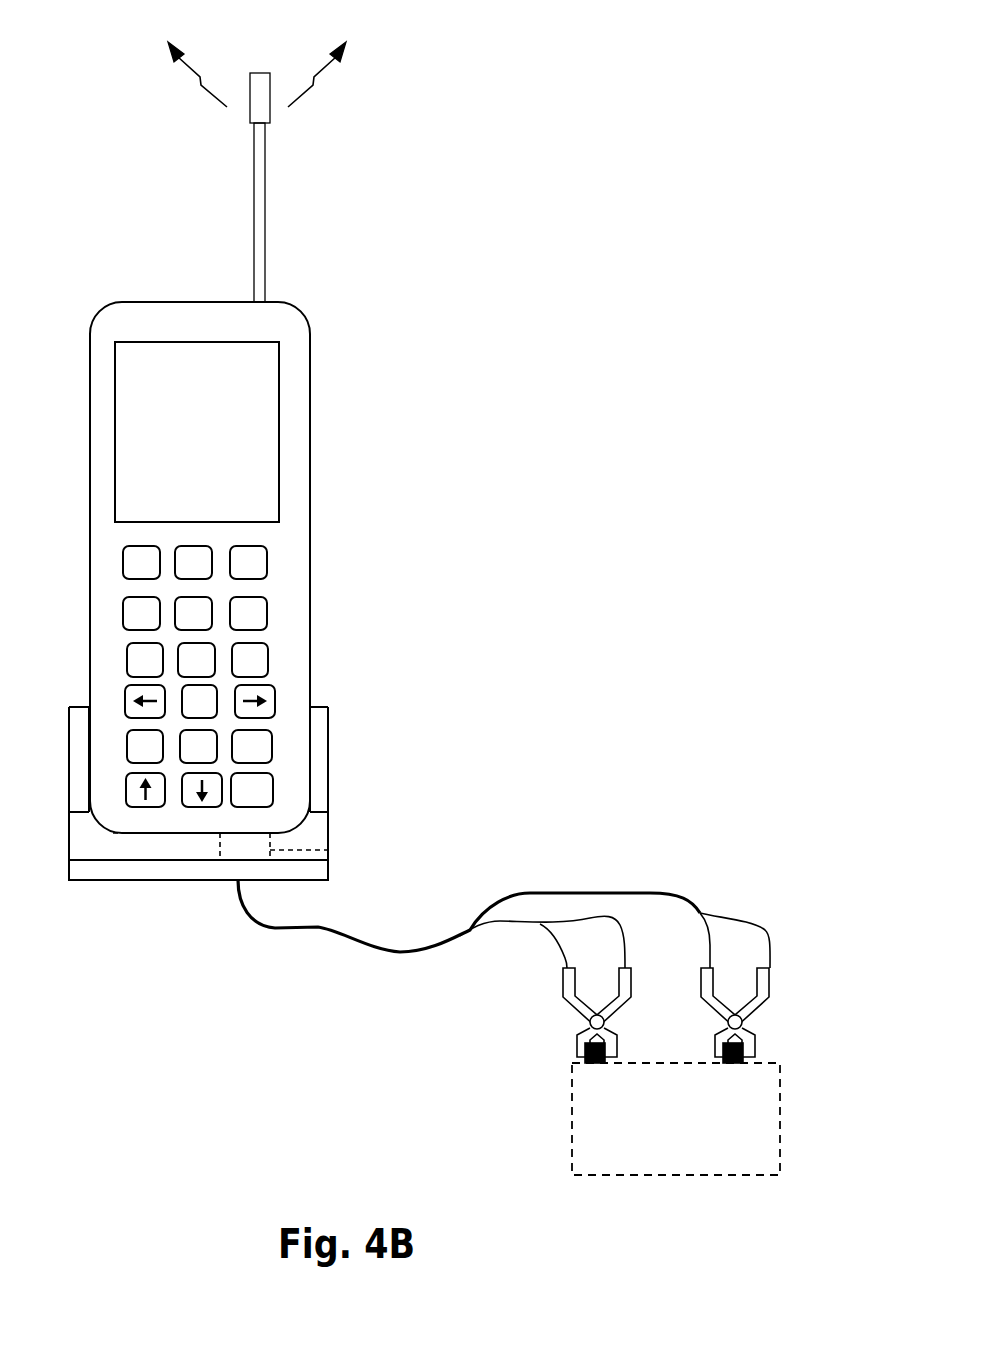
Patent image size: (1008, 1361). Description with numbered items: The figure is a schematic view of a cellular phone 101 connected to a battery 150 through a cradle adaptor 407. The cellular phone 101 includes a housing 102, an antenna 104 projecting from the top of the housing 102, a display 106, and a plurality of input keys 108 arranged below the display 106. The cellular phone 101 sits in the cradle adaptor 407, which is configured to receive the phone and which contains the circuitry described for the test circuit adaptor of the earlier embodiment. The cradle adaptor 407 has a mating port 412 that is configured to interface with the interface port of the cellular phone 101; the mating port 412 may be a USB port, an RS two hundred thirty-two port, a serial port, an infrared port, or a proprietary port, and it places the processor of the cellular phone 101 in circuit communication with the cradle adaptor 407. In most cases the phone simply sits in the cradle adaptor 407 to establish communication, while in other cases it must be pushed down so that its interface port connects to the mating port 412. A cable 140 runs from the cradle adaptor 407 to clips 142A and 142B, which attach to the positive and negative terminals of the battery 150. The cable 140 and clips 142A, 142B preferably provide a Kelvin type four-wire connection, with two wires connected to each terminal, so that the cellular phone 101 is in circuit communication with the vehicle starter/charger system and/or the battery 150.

The cellular phone 101 is at (261, 437).
The housing 102 is at (310, 533).
The antenna 104 is at (265, 204).
The display 106 is at (279, 468).
The input keys 108 is at (268, 610).
The cradle adaptor 407 is at (328, 797).
The mating port 412 is at (328, 851).
The cable 140 is at (390, 953).
The clip 142A is at (563, 988).
The clip 142B is at (773, 1000).
The battery 150 is at (572, 1117).